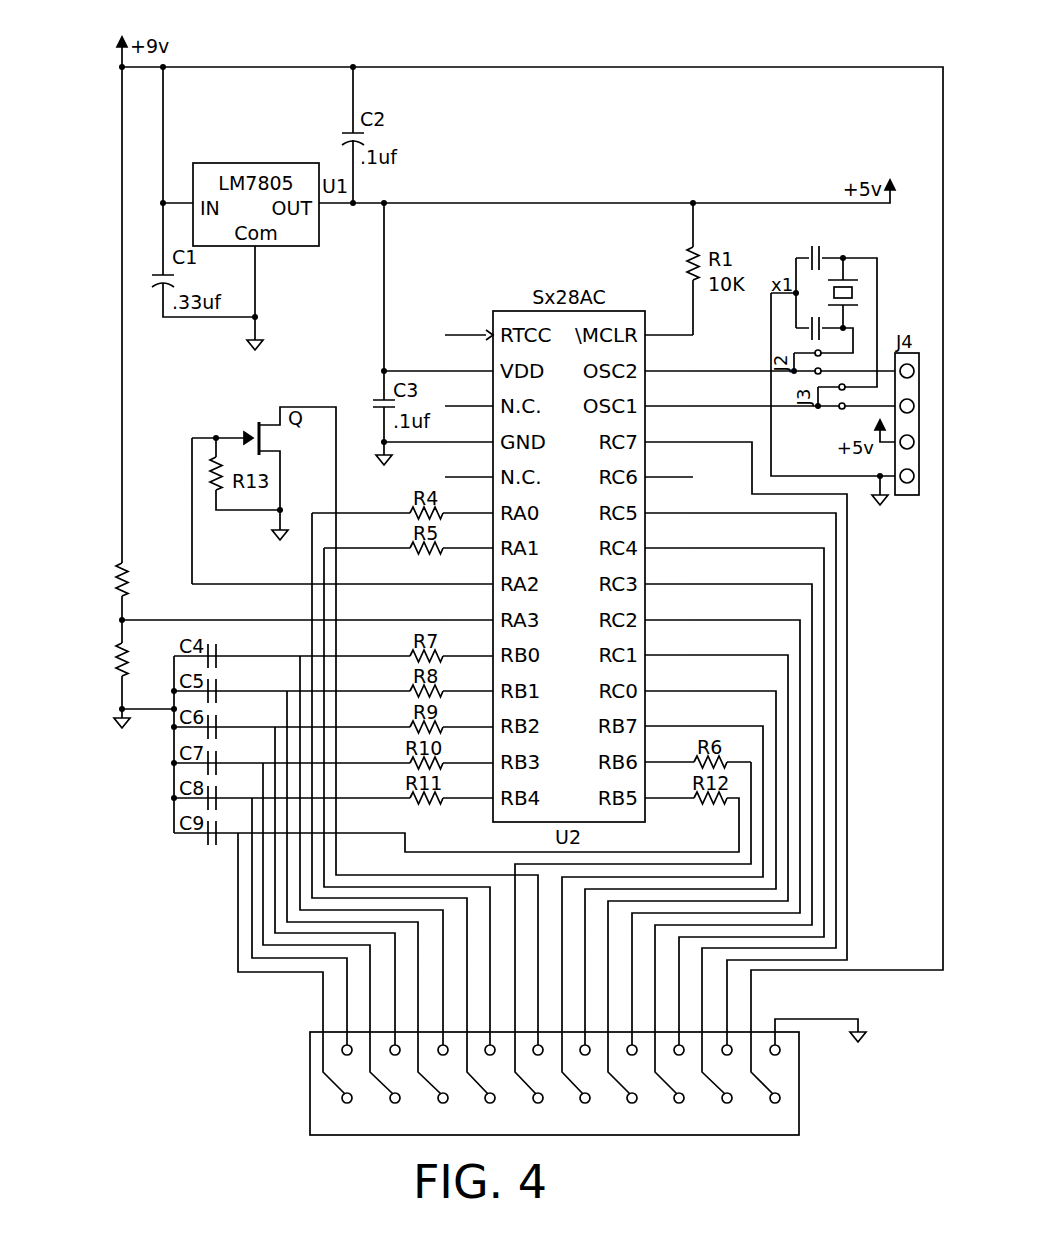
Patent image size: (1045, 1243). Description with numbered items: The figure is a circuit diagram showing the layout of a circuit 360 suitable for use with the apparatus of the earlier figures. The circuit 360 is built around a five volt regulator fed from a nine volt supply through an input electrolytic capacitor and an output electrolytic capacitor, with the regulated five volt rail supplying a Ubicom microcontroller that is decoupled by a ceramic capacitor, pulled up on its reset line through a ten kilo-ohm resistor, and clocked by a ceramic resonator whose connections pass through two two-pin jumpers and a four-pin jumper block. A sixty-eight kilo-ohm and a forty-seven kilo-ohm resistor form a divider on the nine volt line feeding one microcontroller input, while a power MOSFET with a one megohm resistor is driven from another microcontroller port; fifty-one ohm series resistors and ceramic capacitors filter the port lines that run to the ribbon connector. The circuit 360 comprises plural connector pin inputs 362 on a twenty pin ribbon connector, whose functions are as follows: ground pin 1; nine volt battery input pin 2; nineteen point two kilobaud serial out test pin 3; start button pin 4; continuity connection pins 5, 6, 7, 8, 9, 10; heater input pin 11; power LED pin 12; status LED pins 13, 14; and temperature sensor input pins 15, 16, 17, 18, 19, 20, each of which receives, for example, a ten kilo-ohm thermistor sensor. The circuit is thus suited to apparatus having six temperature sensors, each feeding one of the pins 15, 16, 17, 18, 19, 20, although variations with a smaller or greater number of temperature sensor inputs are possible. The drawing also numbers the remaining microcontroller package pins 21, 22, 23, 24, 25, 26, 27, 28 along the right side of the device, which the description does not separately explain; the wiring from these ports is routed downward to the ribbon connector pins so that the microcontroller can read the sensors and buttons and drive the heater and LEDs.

The circuit 360 is at (101, 689).
The connector pin inputs 362 is at (289, 1116).
The ground pin 1 is at (465, 323).
The nine volt battery input pin 2 is at (468, 359).
The serial out test pin 3 is at (469, 394).
The start button pin 4 is at (468, 430).
The continuity connection pin 5 is at (469, 465).
The continuity connection pin 6 is at (468, 501).
The continuity connection pin 7 is at (468, 536).
The continuity connection pin 8 is at (468, 572).
The continuity connection pin 9 is at (468, 608).
The continuity connection pin 10 is at (468, 644).
The heater input pin 11 is at (468, 679).
The power LED pin 12 is at (468, 715).
The status LED pin 13 is at (468, 751).
The status LED pin 14 is at (468, 786).
The temperature sensor input pin 15 is at (669, 786).
The temperature sensor input pin 16 is at (669, 750).
The temperature sensor input pin 17 is at (669, 714).
The temperature sensor input pin 18 is at (669, 679).
The temperature sensor input pin 19 is at (669, 643).
The temperature sensor input pin 20 is at (669, 608).
The IC pin 21 RC3 21 is at (669, 572).
The IC pin 22 RC4 22 is at (669, 536).
The IC pin 23 RC5 23 is at (669, 501).
The IC pin 24 RC6 24 is at (669, 465).
The IC pin 25 RC7 25 is at (669, 430).
The IC pin 26 OSC1 26 is at (669, 394).
The IC pin 27 OSC2 27 is at (669, 359).
The IC pin 28 \MCLR 28 is at (669, 323).